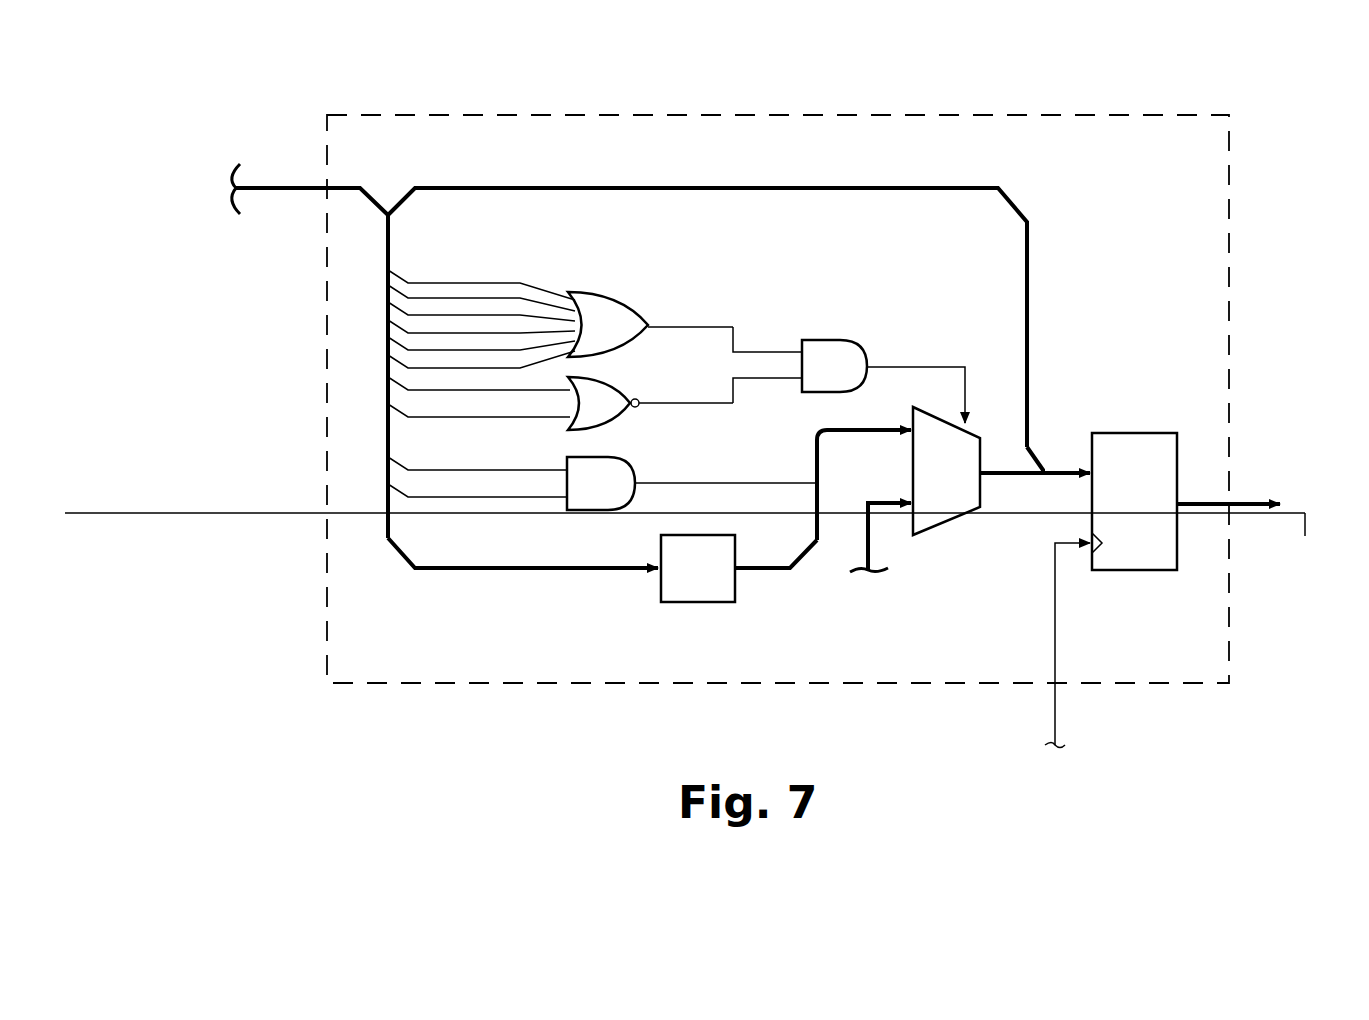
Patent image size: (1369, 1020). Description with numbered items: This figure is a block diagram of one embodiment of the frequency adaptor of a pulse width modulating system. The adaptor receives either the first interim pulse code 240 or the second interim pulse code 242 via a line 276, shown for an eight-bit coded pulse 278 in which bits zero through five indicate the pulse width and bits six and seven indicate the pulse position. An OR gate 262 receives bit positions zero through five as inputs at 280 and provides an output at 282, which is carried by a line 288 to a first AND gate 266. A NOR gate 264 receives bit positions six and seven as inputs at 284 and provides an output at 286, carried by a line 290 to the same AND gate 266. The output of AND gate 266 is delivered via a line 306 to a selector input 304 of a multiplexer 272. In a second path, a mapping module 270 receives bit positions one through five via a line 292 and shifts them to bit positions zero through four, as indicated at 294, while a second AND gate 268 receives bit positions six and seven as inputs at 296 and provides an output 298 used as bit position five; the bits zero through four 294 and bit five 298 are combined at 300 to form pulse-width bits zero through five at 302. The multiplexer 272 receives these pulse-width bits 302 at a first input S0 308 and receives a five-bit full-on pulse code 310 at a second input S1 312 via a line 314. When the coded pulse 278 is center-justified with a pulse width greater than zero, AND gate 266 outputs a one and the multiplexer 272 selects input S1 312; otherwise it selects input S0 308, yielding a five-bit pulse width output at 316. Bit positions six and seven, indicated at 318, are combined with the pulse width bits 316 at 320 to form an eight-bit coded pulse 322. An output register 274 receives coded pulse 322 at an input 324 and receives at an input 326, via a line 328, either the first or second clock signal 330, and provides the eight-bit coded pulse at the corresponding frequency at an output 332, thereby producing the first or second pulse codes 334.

The first interim pulse code 240 is at (92, 160).
The second interim pulse code 242 is at (120, 218).
The coded pulse 278 is at (283, 156).
The line 276 is at (300, 196).
The bit positions six and seven of coded pulse 318 is at (484, 166).
The inputs of OR gate 280 is at (500, 258).
The OR gate 262 is at (600, 290).
The output of OR gate 282 is at (650, 320).
The line 288 is at (727, 322).
The inputs of NOR gate 284 is at (503, 424).
The NOR gate 264 is at (622, 380).
The output of NOR gate 286 is at (675, 402).
The line 290 is at (735, 405).
The first AND gate 266 is at (830, 338).
The line 306 is at (915, 367).
The selector input 304 is at (980, 425).
The inputs of second AND gate 296 is at (518, 504).
The second AND gate 268 is at (622, 458).
The output of second AND gate 298 is at (688, 462).
The line 292 is at (590, 568).
The mapping module 270 is at (690, 540).
The bit positions zero through four 294 is at (818, 540).
The combined bus [5:0] 300 is at (813, 475).
The pulse-width bits zero through five 302 is at (868, 405).
The multiplexer 272 is at (945, 527).
The first input S0 308 is at (915, 445).
The second input S1 312 is at (915, 492).
The line 314 is at (890, 575).
The full-on pulse code 310 is at (878, 625).
The pulse width output 316 is at (1005, 508).
The combination point 320 is at (1040, 478).
The eight-bit coded pulse 322 is at (1050, 440).
The output register 274 is at (1120, 432).
The input of output register 324 is at (1097, 465).
The clock input of output register 326 is at (1104, 543).
The line 328 is at (1058, 640).
The first or second clock signal 330 is at (1105, 756).
The output of output register 332 is at (1210, 512).
The first or second pulse codes 334 is at (1272, 590).